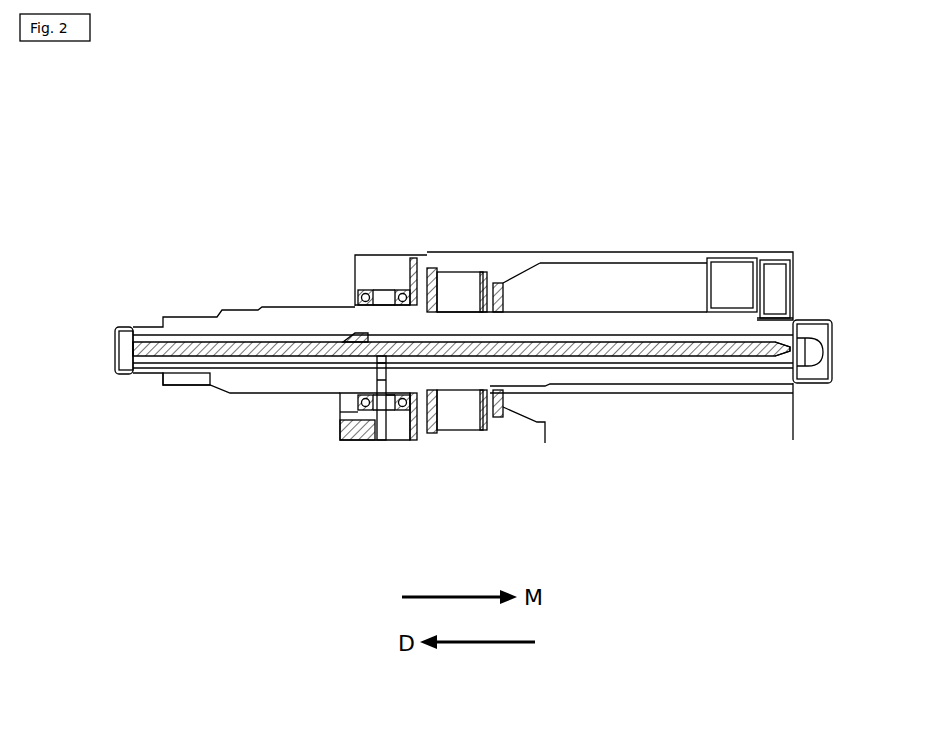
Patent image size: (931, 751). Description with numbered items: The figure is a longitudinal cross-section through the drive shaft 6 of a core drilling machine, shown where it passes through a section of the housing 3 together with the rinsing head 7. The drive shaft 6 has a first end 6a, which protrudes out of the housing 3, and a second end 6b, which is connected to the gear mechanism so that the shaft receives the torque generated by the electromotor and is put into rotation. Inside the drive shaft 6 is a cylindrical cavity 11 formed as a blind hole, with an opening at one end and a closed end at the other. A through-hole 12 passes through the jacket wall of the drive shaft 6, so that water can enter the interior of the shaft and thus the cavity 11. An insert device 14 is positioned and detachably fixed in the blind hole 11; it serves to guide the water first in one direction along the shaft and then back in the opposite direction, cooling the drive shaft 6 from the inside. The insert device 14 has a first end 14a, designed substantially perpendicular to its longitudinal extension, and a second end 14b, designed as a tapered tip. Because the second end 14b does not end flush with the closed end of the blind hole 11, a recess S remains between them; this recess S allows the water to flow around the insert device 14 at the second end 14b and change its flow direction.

The housing 3 is at (596, 262).
The drive shaft 6 is at (300, 313).
The first end 6a is at (123, 375).
The second end 6b is at (812, 372).
The rinsing head 7 is at (390, 270).
The cylindrical cavity 11 is at (572, 330).
The through-hole 12 is at (377, 380).
The insert device 14 is at (580, 347).
The first end 14a is at (133, 350).
The second end 14b is at (792, 348).
The recess S is at (795, 339).